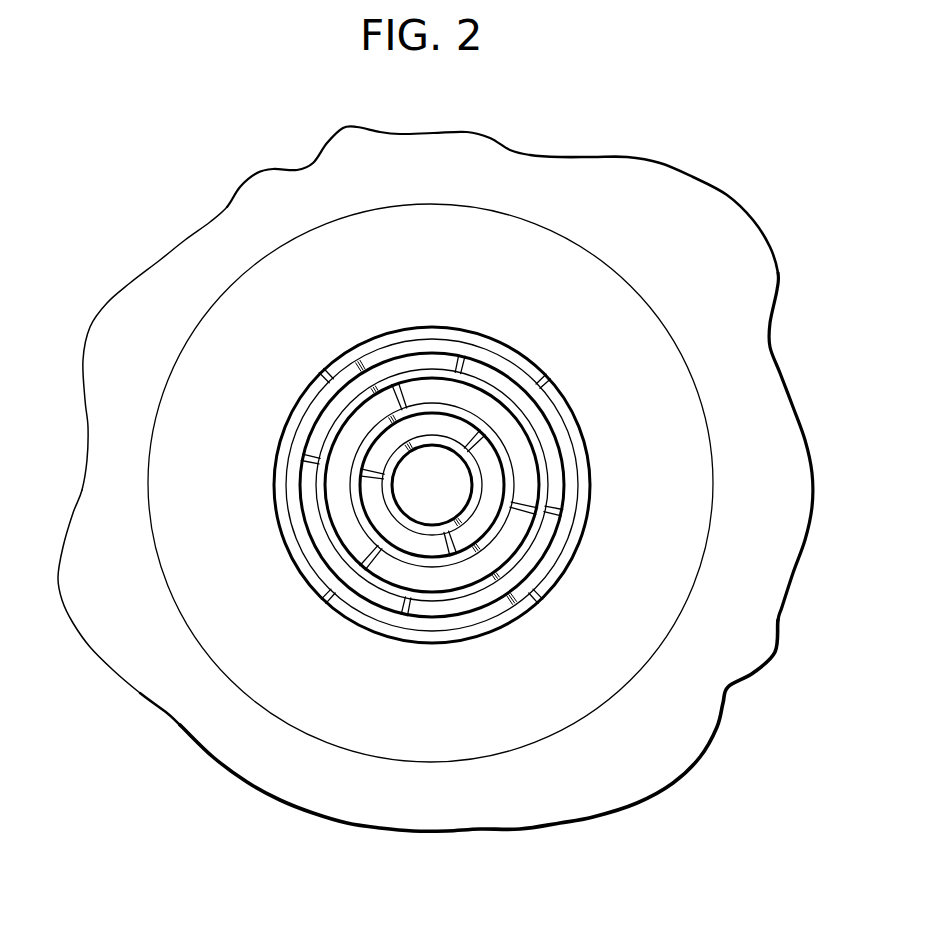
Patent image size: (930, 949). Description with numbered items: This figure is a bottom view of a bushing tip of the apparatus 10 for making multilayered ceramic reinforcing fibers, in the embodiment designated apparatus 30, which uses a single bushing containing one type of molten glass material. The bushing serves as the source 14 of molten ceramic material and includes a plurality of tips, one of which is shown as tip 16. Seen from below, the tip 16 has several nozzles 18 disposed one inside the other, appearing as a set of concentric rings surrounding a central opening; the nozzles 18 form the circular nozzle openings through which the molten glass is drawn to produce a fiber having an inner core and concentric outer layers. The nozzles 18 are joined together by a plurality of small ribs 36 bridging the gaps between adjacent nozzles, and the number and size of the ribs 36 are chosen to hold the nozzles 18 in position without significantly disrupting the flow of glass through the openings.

The apparatus 10 is at (222, 152).
The source 14 is at (777, 240).
The tip 16 is at (622, 638).
The nozzle 18 is at (352, 348).
The apparatus embodiment 30 is at (162, 257).
The rib 36 is at (392, 416).